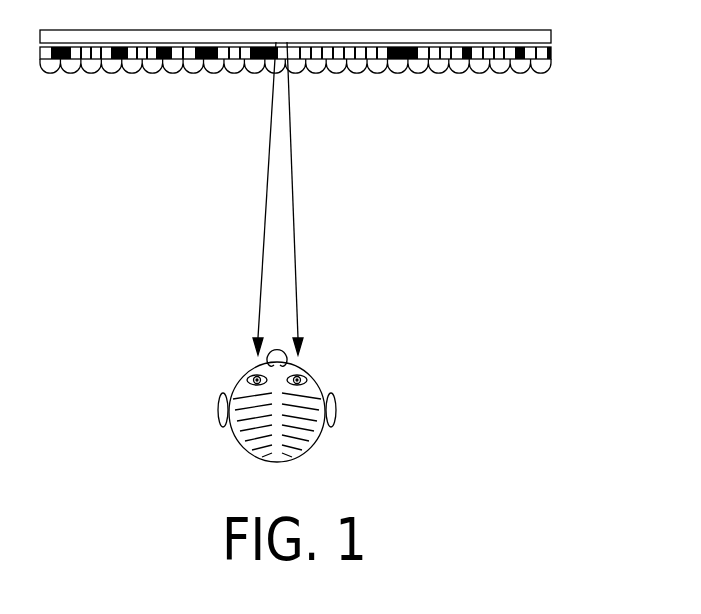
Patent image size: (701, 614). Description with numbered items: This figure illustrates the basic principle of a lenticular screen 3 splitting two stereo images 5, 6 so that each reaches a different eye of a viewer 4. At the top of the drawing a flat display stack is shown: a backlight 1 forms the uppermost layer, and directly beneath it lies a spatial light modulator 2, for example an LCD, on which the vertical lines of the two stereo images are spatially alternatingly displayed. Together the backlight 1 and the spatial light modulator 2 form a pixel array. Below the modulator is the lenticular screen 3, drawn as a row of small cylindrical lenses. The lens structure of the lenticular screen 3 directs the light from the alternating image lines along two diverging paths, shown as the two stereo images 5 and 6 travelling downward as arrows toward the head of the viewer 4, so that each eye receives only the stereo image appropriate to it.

The backlight 1 is at (556, 35).
The spatial light modulator 2 is at (556, 52).
The lenticular screen 3 is at (523, 76).
The viewer 4 is at (318, 380).
The stereo image 5 is at (263, 218).
The stereo image 6 is at (295, 210).